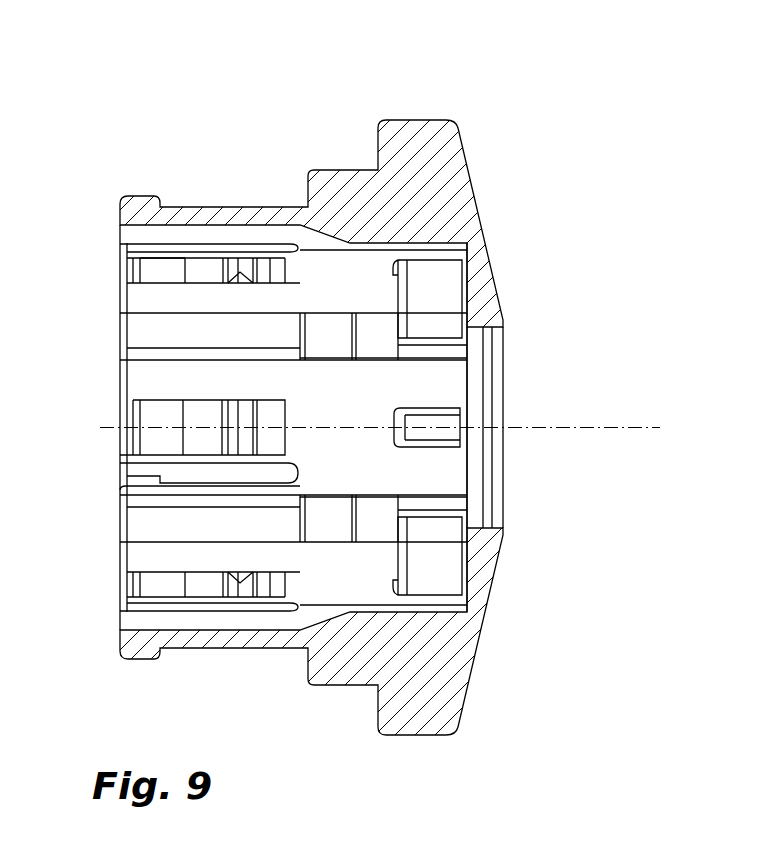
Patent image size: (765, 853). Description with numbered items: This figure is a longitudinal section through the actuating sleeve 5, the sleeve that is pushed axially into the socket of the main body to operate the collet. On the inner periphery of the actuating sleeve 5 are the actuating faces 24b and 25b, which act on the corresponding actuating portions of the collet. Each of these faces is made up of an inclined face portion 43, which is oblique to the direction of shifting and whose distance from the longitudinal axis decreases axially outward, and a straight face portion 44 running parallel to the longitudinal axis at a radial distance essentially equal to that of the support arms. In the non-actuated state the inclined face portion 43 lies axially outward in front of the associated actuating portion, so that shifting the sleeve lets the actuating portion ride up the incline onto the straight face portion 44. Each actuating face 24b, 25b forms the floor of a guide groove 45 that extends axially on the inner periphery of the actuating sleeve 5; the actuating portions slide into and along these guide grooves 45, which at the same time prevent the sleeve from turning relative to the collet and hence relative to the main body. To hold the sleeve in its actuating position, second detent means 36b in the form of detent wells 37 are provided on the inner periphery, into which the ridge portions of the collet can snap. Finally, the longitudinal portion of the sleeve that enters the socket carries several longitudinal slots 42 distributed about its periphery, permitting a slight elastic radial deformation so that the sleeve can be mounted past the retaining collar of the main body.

The actuating sleeve 5 is at (320, 128).
The actuating face 24b is at (310, 342).
The actuating face 25b is at (146, 272).
The second detent means 36b is at (243, 272).
The detent wells 37 is at (242, 598).
The longitudinal slots 42 is at (140, 478).
The inclined face portion 43 is at (168, 271).
The straight face portion 44 is at (206, 276).
The guide groove 45 is at (273, 321).